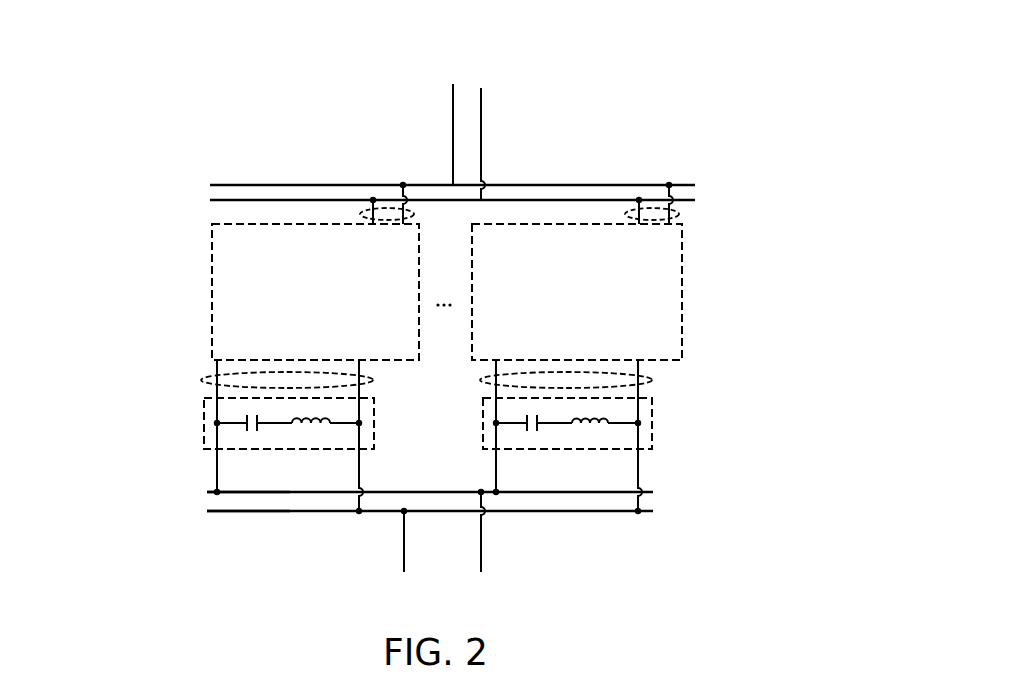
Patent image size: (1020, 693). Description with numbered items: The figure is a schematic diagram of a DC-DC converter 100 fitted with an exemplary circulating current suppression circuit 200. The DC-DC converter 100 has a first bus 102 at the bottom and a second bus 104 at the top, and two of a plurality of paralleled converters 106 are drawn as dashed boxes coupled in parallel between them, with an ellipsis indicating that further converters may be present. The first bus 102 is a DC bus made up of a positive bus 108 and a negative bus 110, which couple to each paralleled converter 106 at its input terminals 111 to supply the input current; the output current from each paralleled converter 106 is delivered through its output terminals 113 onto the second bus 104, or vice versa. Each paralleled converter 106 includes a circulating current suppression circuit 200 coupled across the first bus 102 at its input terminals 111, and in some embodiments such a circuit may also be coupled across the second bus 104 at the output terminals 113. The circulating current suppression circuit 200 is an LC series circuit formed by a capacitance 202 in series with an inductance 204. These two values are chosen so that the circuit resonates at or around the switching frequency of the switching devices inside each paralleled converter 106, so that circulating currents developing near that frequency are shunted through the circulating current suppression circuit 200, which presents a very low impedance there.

The DC-DC converter 100 is at (350, 58).
The first bus 102 is at (281, 531).
The second bus 104 is at (560, 162).
The paralleled converter 106 is at (210, 295).
The positive bus 108 is at (620, 494).
The negative bus 110 is at (560, 513).
The input terminals 111 is at (199, 380).
The output terminals 113 is at (419, 214).
The circulating current suppression circuit 200 is at (202, 423).
The capacitance 202 is at (262, 434).
The inductance 204 is at (331, 411).